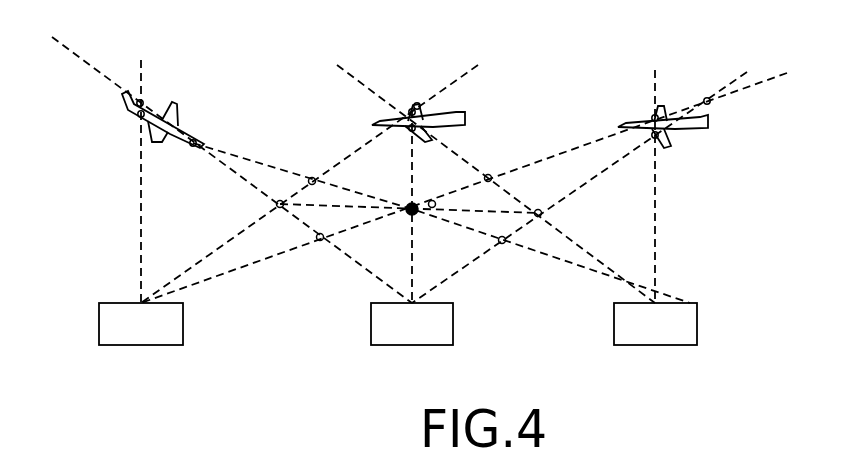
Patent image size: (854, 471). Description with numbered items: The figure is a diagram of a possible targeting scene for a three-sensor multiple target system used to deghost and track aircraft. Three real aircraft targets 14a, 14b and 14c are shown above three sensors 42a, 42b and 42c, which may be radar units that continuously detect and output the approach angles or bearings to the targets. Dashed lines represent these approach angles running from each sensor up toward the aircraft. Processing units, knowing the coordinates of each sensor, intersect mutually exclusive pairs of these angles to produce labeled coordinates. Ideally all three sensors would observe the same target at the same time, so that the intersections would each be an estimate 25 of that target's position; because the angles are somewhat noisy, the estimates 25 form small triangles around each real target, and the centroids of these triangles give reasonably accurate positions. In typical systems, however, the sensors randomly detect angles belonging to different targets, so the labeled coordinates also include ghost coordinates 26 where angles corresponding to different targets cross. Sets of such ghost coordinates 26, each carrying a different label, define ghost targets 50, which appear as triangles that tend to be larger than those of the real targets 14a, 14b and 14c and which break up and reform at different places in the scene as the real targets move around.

The target 14a is at (184, 70).
The target 14b is at (448, 45).
The target 14c is at (694, 58).
The target estimated coordinates 25 is at (122, 142).
The ghost coordinates 26 is at (278, 204).
The ghost target 50 is at (310, 180).
The sensor 42a is at (128, 346).
The sensor 42b is at (398, 346).
The sensor 42c is at (638, 346).